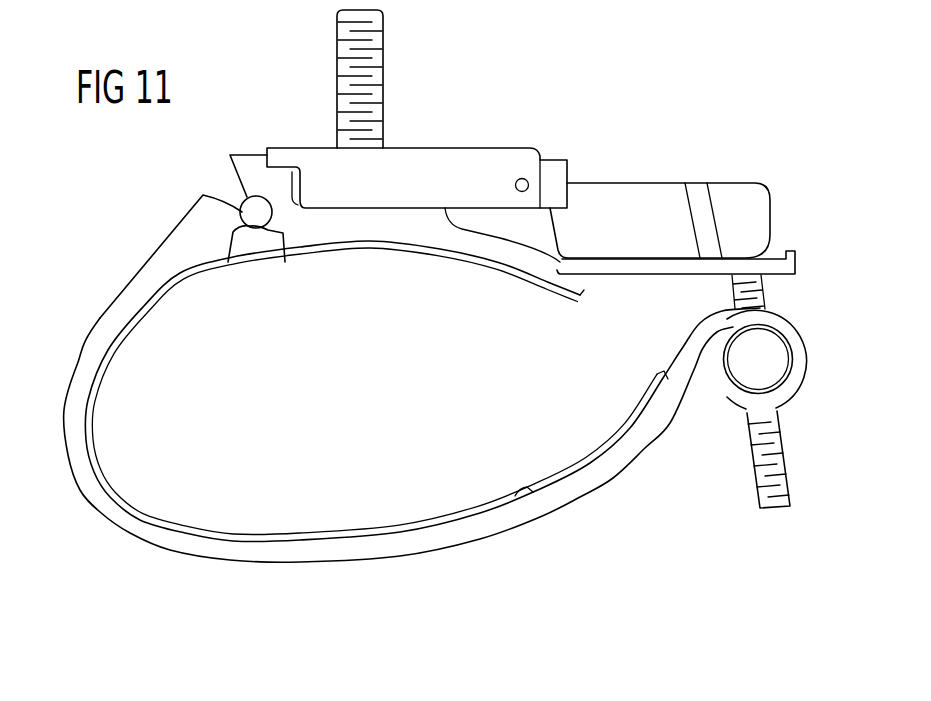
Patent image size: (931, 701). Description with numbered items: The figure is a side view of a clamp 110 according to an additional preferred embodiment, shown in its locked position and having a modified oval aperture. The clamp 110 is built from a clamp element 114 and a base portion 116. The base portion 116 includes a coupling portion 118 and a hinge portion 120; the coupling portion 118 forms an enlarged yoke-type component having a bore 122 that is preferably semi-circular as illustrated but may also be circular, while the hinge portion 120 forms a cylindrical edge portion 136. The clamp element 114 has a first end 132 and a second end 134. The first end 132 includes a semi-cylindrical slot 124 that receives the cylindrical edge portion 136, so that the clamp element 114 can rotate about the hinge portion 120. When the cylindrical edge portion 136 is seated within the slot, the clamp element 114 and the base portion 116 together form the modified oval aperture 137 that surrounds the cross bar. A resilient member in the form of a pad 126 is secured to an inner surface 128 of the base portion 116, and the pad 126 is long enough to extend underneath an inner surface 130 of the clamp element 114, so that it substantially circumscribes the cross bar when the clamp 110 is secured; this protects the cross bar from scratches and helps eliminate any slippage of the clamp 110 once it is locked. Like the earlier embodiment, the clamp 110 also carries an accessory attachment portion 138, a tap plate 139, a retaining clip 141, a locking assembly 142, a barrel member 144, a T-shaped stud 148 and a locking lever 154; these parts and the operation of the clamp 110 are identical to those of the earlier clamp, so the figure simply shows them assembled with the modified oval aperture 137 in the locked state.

The clamp 110 is at (96, 308).
The clamp element 114 is at (236, 147).
The base portion 116 is at (248, 560).
The coupling portion 118 is at (787, 397).
The hinge portion 120 is at (193, 232).
The bore 122 is at (787, 357).
The semi-cylindrical slot 124 is at (283, 250).
The pad 126 is at (437, 521).
The inner surface 128 is at (537, 492).
The inner surface 130 is at (498, 260).
The first end 132 is at (258, 167).
The second end 134 is at (795, 265).
The cylindrical edge portion 136 is at (252, 213).
The modified oval aperture 137 is at (163, 468).
The accessory attachment portion 138 is at (405, 225).
The tap plate 139 is at (373, 62).
The retaining clip 141 is at (500, 165).
The locking assembly 142 is at (728, 307).
The barrel member 144 is at (748, 372).
The T-shaped stud 148 is at (735, 300).
The locking lever 154 is at (643, 180).